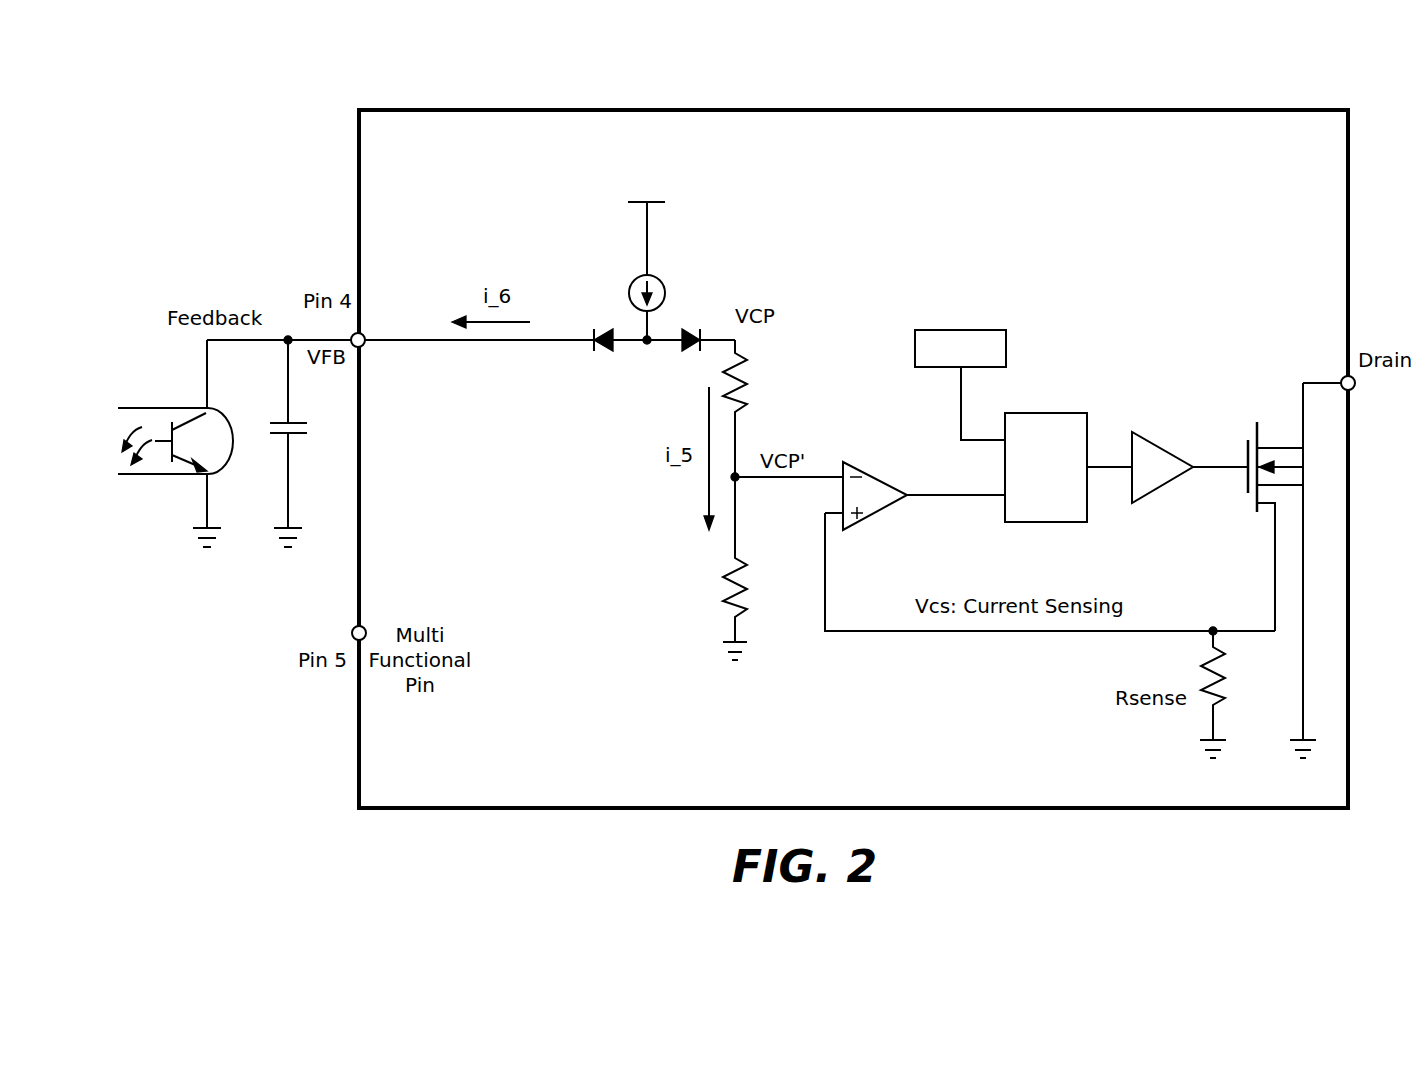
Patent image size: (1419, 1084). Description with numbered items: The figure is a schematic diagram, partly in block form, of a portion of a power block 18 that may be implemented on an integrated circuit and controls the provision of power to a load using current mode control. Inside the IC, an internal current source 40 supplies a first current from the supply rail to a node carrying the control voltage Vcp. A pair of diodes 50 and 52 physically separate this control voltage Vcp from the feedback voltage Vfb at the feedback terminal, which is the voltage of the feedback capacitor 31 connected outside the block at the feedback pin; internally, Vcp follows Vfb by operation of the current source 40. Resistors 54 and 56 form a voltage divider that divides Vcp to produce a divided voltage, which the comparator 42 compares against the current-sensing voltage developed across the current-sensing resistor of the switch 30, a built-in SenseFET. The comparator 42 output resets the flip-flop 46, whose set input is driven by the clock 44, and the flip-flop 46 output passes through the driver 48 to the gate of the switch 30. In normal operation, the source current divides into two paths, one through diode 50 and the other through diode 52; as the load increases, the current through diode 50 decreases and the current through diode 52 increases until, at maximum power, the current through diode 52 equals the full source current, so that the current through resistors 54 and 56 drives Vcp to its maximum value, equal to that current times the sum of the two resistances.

The power block 18 is at (1350, 205).
The switch 30 is at (1254, 500).
The feedback capacitor 31 is at (291, 437).
The internal current source 40 is at (663, 285).
The comparator 42 is at (889, 483).
The clock 44 is at (978, 330).
The flip-flop 46 is at (1070, 413).
The driver 48 is at (1166, 447).
The diode 50 is at (606, 353).
The diode 52 is at (692, 353).
The resistor 54 is at (747, 372).
The resistor 56 is at (723, 585).